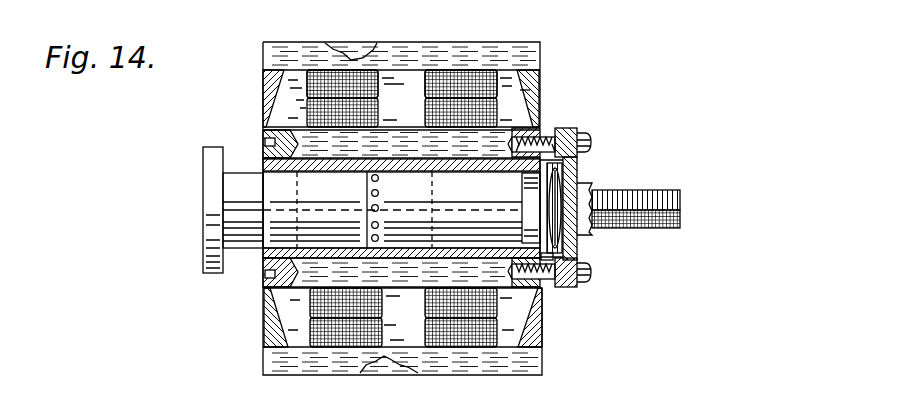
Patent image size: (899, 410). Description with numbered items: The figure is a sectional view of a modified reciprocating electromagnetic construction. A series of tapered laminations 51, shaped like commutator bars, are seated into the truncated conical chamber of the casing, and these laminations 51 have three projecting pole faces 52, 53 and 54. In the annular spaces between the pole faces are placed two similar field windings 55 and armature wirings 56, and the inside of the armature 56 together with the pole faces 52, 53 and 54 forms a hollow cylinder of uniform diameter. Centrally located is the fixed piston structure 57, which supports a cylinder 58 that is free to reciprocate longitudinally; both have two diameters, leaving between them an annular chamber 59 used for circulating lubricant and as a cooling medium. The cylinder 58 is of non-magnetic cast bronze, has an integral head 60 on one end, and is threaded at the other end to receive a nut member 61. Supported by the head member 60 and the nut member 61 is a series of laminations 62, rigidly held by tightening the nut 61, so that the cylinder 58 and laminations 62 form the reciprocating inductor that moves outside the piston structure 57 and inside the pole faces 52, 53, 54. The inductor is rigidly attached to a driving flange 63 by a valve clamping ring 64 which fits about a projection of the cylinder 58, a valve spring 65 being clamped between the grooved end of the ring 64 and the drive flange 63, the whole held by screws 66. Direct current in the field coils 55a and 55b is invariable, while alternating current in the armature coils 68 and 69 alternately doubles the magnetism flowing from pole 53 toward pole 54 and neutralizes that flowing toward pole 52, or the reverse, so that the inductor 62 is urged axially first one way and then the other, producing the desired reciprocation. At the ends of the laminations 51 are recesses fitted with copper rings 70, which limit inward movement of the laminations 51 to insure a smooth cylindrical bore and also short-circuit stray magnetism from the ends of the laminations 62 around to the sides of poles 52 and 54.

The laminations 51 is at (353, 48).
The pole face 52 is at (290, 208).
The pole face 53 is at (398, 209).
The pole face 54 is at (513, 204).
The field windings 55 is at (447, 72).
The field coil 55a is at (468, 77).
The field coil 55b is at (325, 72).
The armature windings 56 is at (425, 105).
The fixed piston structure 57 is at (235, 198).
The cylinder 58 is at (480, 171).
The annular chamber 59 is at (413, 172).
The integral head 60 is at (537, 135).
The nut member 61 is at (263, 137).
The laminations 62 is at (401, 208).
The driving flange 63 is at (577, 168).
The valve clamping ring 64 is at (548, 262).
The valve spring 65 is at (565, 236).
The screws 66 is at (585, 133).
The armature coil 68 is at (533, 90).
The armature coil 69 is at (305, 108).
The rings 70 is at (261, 90).